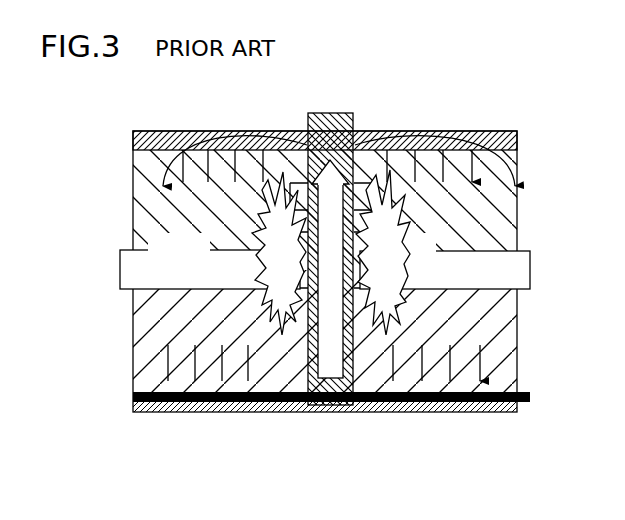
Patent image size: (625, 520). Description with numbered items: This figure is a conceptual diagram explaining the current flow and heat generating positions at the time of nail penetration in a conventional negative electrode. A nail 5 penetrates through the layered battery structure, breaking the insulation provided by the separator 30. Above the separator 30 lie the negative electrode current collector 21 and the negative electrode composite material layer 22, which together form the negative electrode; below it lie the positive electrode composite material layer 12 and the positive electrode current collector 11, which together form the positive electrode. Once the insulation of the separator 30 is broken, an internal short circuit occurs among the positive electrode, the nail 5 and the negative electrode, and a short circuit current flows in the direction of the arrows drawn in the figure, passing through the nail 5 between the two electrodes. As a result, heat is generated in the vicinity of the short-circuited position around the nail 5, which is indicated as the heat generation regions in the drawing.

The nail 5 is at (330, 115).
The negative electrode current collector 21 is at (133, 141).
The negative electrode composite material layer 22 is at (150, 209).
The separator 30 is at (130, 272).
The positive electrode composite material layer 12 is at (150, 340).
The positive electrode current collector 11 is at (133, 404).